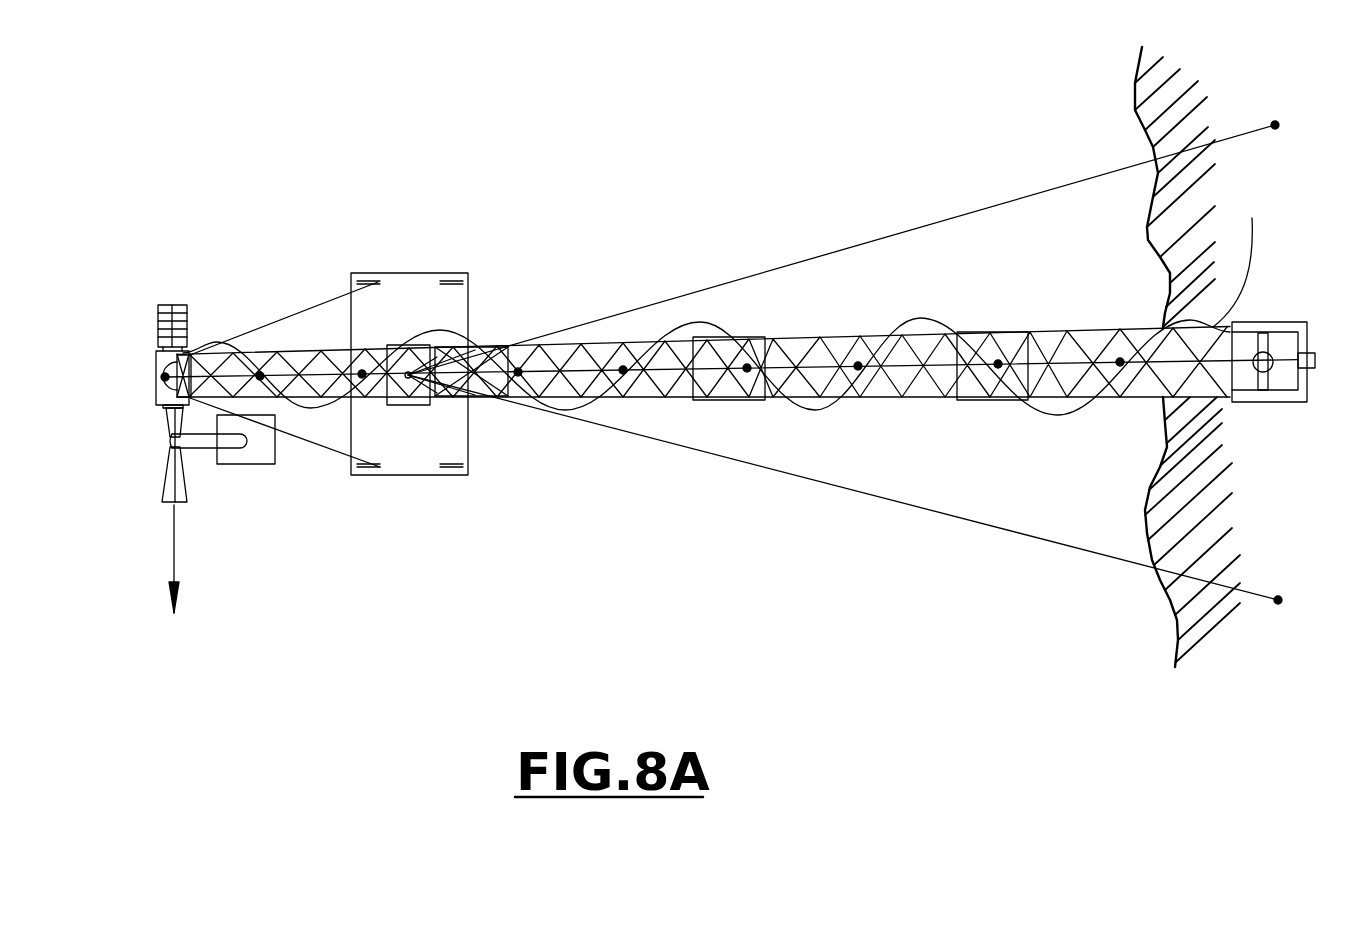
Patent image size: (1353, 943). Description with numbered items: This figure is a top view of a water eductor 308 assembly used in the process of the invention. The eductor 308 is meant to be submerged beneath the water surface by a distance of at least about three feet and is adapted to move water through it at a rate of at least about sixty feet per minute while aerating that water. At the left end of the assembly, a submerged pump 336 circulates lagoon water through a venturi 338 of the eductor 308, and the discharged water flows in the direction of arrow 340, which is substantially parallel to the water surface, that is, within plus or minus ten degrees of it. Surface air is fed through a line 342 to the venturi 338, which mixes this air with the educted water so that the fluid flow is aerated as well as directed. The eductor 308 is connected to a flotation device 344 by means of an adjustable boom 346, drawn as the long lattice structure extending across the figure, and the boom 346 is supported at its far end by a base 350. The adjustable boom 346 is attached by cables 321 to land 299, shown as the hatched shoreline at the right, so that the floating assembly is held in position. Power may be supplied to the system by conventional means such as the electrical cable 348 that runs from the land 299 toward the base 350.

The land 299 is at (1210, 183).
The water eductor 308 is at (168, 422).
The cables 321 is at (311, 313).
The submerged pump 336 is at (157, 362).
The venturi 338 is at (163, 488).
The arrow 340 is at (175, 558).
The line 342 is at (200, 450).
The flotation device 344 is at (411, 273).
The adjustable boom 346 is at (612, 348).
The electrical cable 348 is at (1247, 250).
The base 350 is at (1263, 388).